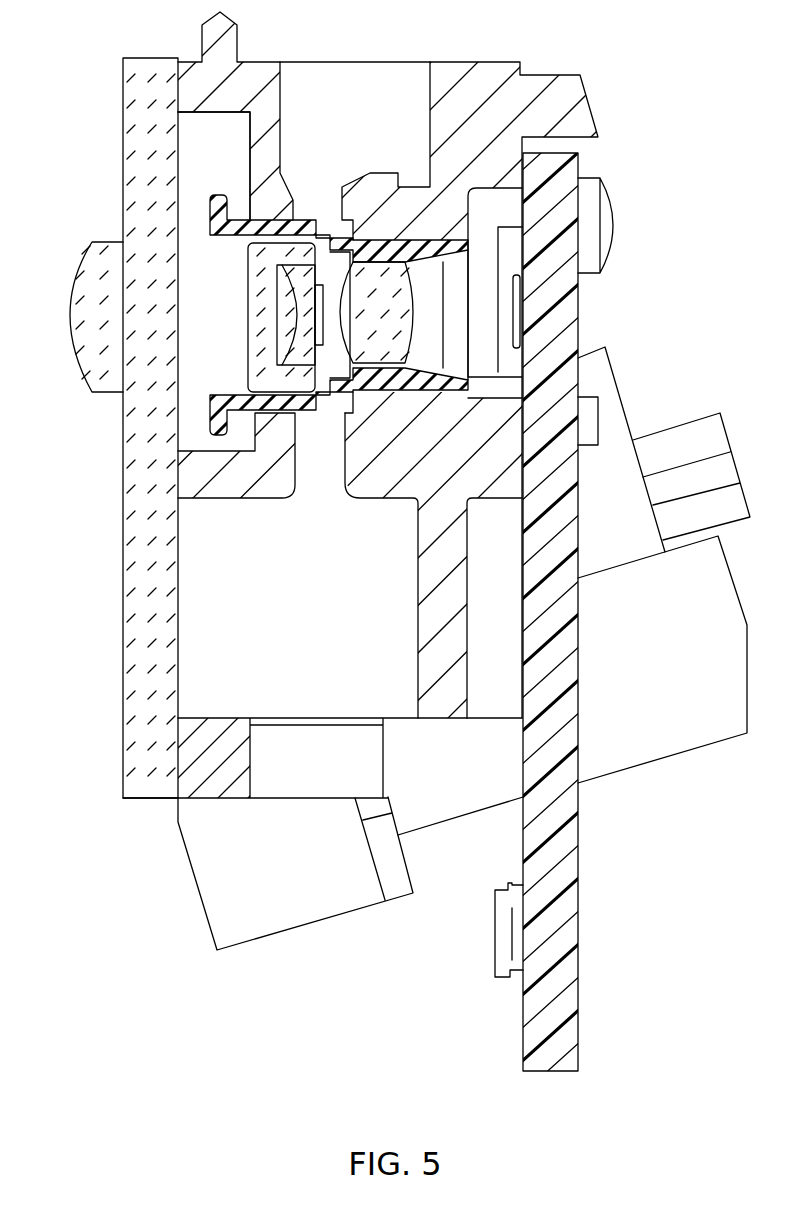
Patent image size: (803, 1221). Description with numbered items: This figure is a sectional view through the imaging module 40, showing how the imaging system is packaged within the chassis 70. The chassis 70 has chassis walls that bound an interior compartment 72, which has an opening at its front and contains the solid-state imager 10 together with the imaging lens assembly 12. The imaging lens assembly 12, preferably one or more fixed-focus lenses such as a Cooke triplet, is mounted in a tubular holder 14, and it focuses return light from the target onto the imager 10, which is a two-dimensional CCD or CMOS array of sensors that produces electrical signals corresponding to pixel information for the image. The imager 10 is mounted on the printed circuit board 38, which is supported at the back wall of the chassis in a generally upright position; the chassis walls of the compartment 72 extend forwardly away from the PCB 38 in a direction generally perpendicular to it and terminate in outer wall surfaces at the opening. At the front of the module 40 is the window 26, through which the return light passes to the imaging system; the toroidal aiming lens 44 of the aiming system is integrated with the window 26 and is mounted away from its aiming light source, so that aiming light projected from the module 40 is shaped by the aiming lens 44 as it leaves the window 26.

The imaging module 40 is at (688, 42).
The window 26 is at (152, 64).
The toroidal aiming lens 44 is at (77, 318).
The interior compartment 72 is at (213, 113).
The tubular holder 14 is at (293, 213).
The imaging lens assembly 12 is at (393, 280).
The solid-state imager 10 is at (512, 238).
The printed circuit board 38 is at (568, 162).
The chassis 70 is at (238, 920).